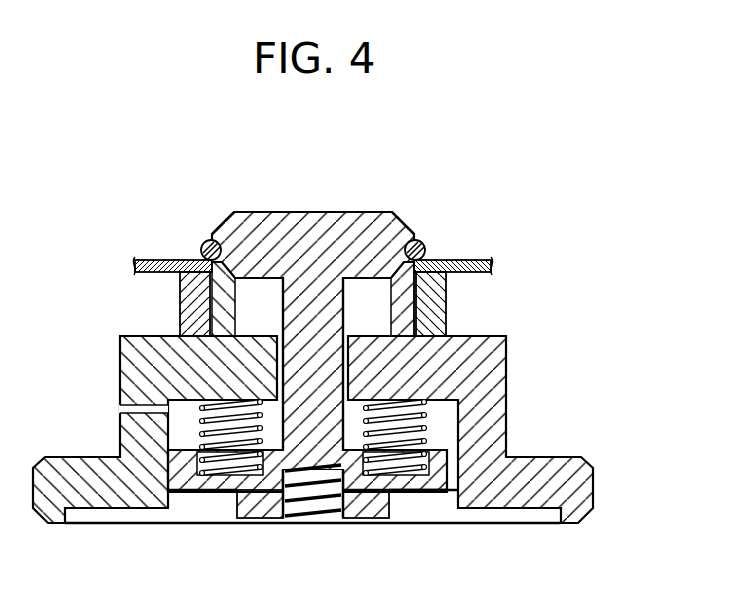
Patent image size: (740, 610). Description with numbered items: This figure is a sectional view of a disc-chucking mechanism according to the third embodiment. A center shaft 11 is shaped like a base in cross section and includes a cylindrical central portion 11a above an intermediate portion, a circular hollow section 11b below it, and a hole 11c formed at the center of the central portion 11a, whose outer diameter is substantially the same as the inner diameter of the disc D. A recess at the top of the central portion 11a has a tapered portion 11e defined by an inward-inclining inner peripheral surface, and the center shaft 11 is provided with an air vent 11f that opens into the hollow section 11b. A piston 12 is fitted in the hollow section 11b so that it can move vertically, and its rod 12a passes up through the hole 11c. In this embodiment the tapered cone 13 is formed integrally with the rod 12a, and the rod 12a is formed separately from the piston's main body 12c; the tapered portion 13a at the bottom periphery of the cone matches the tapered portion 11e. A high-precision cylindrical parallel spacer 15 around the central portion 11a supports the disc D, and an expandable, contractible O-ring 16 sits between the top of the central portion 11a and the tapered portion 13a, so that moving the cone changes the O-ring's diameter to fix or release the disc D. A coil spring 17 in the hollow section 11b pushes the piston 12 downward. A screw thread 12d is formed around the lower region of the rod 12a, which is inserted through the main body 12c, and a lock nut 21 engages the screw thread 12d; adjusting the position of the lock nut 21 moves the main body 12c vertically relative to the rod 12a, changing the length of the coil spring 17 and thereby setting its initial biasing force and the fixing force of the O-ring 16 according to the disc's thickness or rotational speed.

The center shaft 11 is at (313, 427).
The central portion 11a is at (222, 302).
The hollow section 11b is at (447, 497).
The hole 11c is at (345, 362).
The tapered portion 11e is at (413, 287).
The air vent 11f is at (143, 411).
The piston 12 is at (248, 375).
The rod 12a is at (300, 366).
The main body 12c is at (418, 483).
The screw thread 12d is at (300, 503).
The tapered cone 13 is at (259, 228).
The tapered portion 13a is at (396, 232).
The parallel spacer 15 is at (432, 322).
The O-ring 16 is at (424, 252).
The coil spring 17 is at (430, 440).
The lock nut 21 is at (368, 505).
The disc D is at (165, 260).